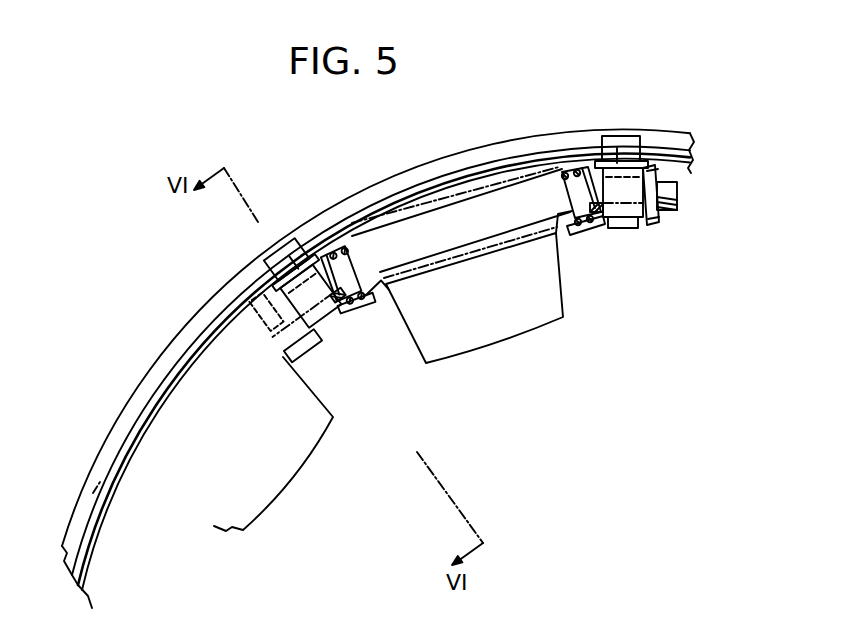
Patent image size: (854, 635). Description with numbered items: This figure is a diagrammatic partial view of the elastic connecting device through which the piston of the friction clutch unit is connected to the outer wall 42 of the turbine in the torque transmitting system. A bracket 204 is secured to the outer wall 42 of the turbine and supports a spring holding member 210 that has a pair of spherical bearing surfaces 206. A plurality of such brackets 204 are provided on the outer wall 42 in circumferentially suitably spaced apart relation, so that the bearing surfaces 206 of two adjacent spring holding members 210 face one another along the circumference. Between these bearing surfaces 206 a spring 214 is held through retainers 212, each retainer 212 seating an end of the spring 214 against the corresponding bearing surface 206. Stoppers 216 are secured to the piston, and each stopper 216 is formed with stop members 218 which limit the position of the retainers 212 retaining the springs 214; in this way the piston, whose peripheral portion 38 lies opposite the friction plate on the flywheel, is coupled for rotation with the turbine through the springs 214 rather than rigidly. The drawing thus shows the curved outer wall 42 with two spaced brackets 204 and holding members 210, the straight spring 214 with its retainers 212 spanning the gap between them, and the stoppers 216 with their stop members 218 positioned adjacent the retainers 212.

The peripheral portion 38 is at (360, 207).
The outer wall 42 is at (543, 143).
The bracket 204 is at (633, 137).
The spherical bearing surface 206 is at (600, 161).
The spring holding member 210 is at (630, 194).
The retainer 212 is at (567, 192).
The spring 214 is at (368, 300).
The stopper 216 is at (556, 283).
The stop member 218 is at (615, 158).